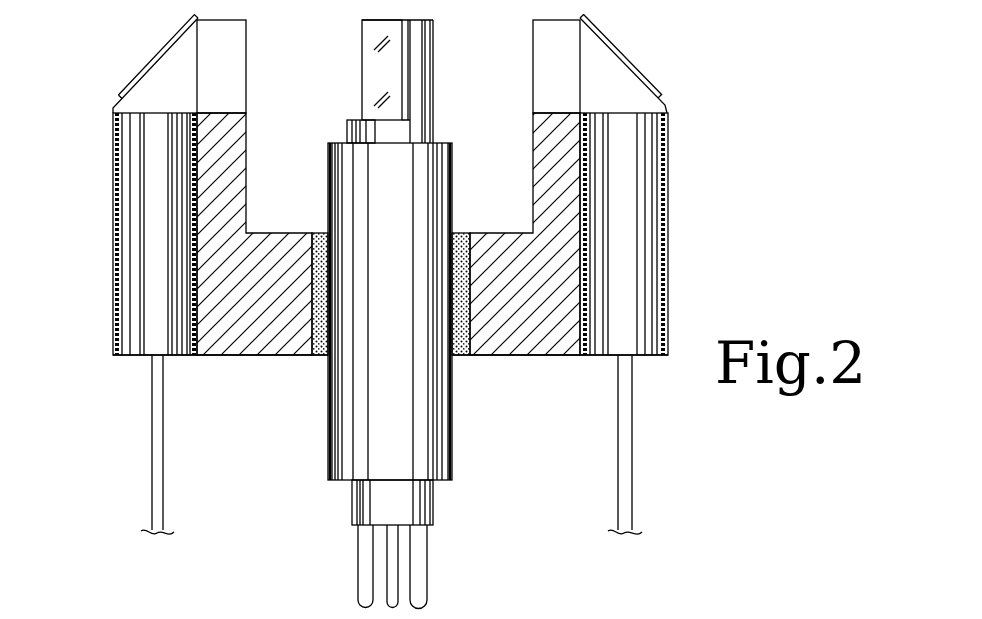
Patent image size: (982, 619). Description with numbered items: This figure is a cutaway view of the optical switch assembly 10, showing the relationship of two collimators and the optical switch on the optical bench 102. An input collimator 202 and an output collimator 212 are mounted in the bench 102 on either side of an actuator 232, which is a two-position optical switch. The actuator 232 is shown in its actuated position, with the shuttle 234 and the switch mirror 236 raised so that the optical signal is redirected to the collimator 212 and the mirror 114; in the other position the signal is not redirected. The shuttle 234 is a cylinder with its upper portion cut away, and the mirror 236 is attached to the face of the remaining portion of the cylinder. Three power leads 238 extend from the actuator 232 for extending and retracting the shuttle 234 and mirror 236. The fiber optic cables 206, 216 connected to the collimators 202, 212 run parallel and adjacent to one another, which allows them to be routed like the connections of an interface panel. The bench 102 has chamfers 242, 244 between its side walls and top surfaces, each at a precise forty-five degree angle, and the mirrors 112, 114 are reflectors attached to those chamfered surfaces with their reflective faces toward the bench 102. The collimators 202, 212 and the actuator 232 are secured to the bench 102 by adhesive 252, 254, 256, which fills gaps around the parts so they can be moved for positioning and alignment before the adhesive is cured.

The optical switch assembly 10 is at (690, 36).
The optical bench 102 is at (528, 358).
The mirror 112 is at (645, 62).
The mirror 114 is at (130, 81).
The input collimator 202 is at (648, 360).
The fiber optic cable 206 is at (632, 500).
The output collimator 212 is at (144, 358).
The fiber optic cable 216 is at (152, 470).
The actuator 232 is at (408, 276).
The shuttle 234 is at (433, 48).
The switch mirror 236 is at (370, 80).
The power leads 238 is at (372, 566).
The chamfer 242 is at (580, 45).
The chamfer 244 is at (200, 46).
The adhesive 252 is at (580, 100).
The adhesive 254 is at (320, 234).
The adhesive 256 is at (200, 100).